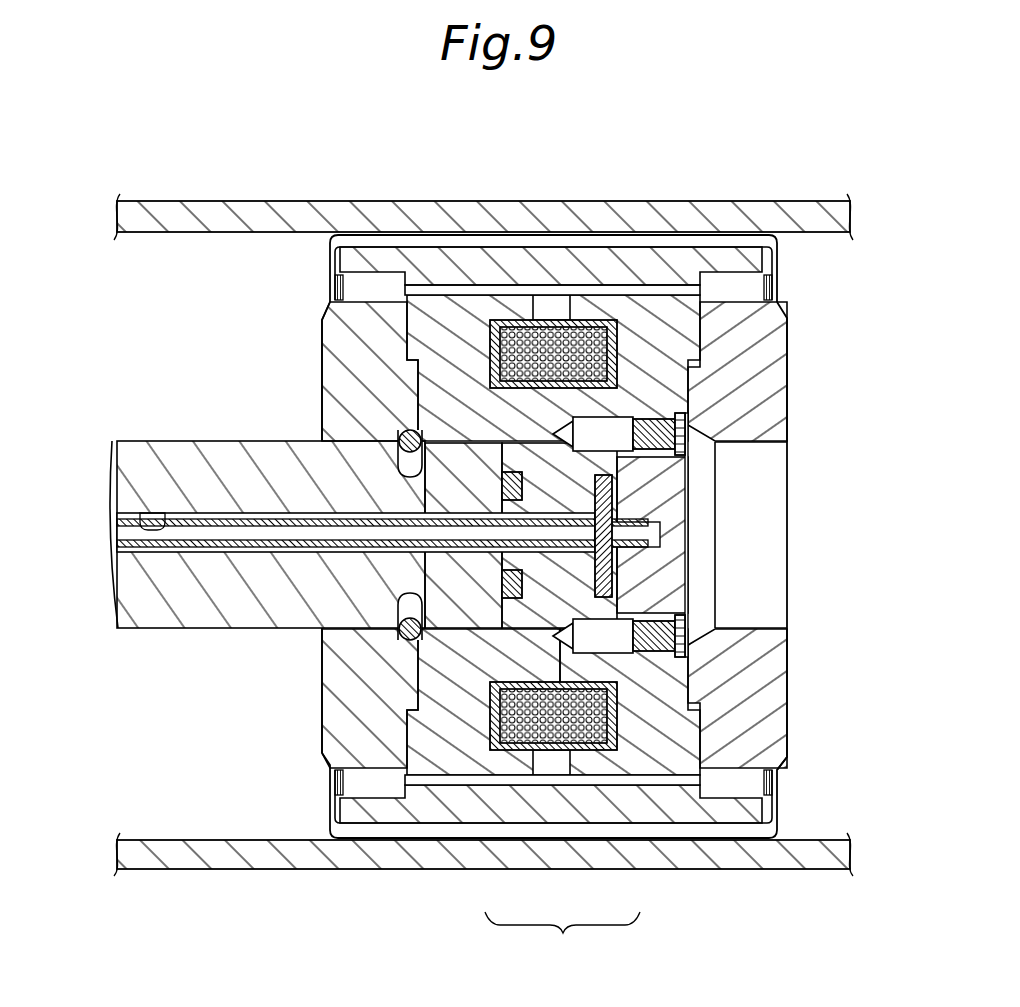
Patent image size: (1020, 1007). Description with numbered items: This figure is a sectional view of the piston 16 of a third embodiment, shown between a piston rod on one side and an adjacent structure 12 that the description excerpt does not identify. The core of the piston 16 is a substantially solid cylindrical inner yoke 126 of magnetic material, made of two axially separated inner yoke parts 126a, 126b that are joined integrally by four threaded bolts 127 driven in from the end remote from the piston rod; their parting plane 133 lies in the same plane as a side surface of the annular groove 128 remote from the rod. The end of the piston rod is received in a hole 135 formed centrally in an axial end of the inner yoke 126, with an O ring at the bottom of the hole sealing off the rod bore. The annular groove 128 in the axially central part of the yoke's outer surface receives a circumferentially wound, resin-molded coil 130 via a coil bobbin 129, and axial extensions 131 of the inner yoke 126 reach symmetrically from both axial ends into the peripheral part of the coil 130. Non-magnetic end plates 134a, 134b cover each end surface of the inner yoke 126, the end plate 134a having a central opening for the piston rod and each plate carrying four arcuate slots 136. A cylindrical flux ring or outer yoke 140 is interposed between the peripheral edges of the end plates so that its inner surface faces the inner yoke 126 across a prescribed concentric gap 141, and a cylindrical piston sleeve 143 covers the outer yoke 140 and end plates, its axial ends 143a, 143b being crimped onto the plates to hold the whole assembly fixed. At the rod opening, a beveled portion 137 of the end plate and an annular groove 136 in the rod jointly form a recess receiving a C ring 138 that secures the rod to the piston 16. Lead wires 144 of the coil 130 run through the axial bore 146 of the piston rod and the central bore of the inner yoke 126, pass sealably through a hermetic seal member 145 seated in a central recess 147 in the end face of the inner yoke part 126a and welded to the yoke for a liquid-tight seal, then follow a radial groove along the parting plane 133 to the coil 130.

The base plate 12 is at (290, 869).
The piston 16 is at (201, 774).
The inner yoke 126 is at (562, 938).
The inner yoke part 126a is at (488, 768).
The inner yoke part 126b is at (610, 773).
The threaded bolts 127 is at (680, 448).
The annular groove 128 is at (440, 337).
The coil bobbin 129 is at (605, 362).
The coil 130 is at (640, 380).
The axial extensions 131 is at (605, 300).
The parting plane 133 is at (690, 678).
The end plate 134a is at (324, 754).
The end plate 134b is at (782, 745).
The hole 135 is at (300, 443).
The arcuate slots 136 is at (340, 292).
The beveled portion 137 is at (403, 430).
The C ring 138 is at (440, 630).
The outer yoke 140 is at (485, 258).
The gap 141 is at (455, 787).
The piston sleeve 143 is at (388, 836).
The axial end of piston sleeve 143a is at (335, 823).
The axial end of piston sleeve 143b is at (780, 827).
The lead wires 144 is at (118, 545).
The hermetic seal member 145 is at (612, 498).
The axial bore 146 is at (117, 510).
The central recess 147 is at (500, 615).